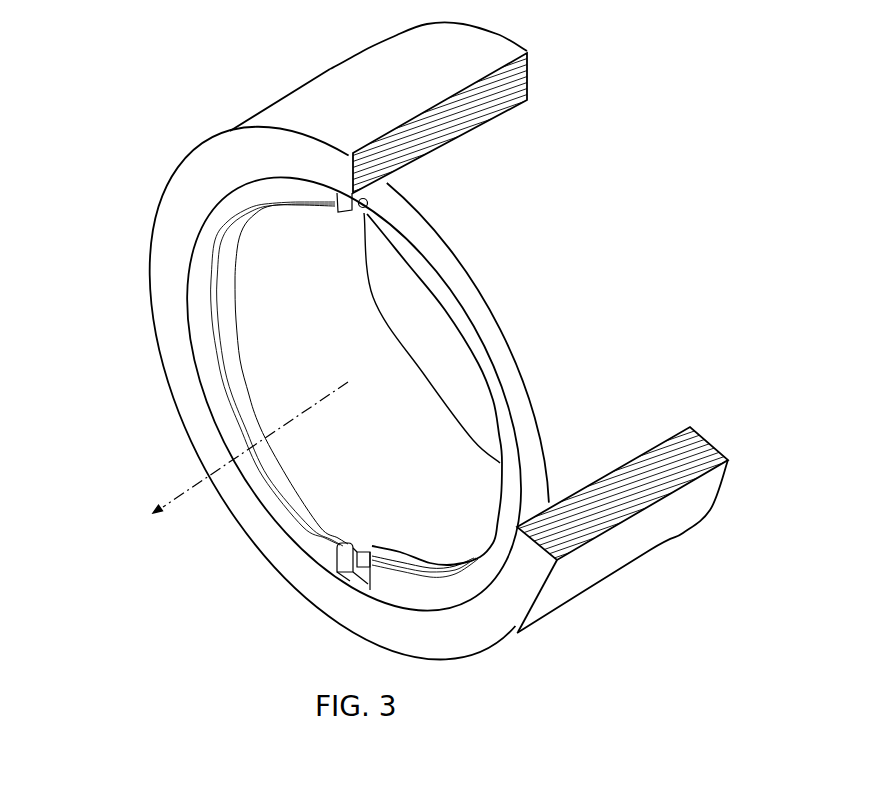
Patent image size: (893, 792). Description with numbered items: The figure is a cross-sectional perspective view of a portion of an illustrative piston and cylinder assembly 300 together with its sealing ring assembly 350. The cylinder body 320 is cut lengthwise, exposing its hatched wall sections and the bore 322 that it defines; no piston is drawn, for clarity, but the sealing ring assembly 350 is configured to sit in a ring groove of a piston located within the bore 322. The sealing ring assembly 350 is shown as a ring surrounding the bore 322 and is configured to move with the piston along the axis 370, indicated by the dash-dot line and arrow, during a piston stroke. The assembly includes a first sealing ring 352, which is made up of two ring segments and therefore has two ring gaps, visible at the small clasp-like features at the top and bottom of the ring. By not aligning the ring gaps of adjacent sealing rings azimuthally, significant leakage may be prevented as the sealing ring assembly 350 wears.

The piston and cylinder assembly 300 is at (701, 225).
The tubular body 320 is at (482, 328).
The bore 322 is at (368, 387).
The sealing ring assembly 350 is at (196, 390).
The first sealing ring 352 is at (200, 266).
The axis 370 is at (226, 463).